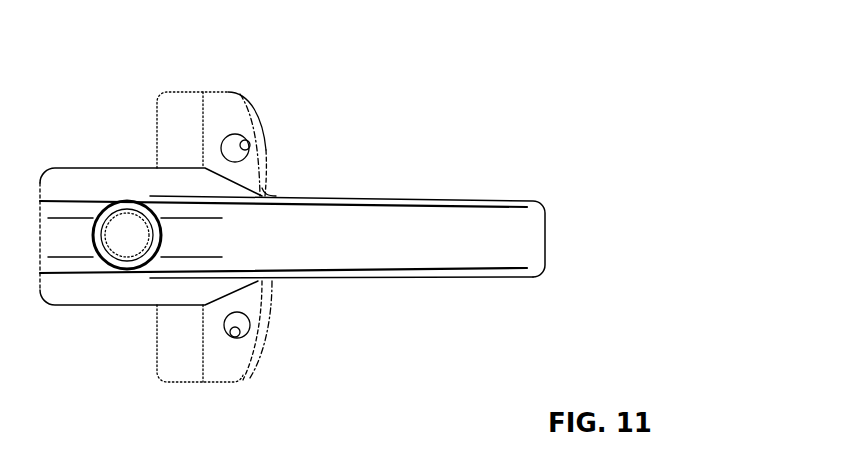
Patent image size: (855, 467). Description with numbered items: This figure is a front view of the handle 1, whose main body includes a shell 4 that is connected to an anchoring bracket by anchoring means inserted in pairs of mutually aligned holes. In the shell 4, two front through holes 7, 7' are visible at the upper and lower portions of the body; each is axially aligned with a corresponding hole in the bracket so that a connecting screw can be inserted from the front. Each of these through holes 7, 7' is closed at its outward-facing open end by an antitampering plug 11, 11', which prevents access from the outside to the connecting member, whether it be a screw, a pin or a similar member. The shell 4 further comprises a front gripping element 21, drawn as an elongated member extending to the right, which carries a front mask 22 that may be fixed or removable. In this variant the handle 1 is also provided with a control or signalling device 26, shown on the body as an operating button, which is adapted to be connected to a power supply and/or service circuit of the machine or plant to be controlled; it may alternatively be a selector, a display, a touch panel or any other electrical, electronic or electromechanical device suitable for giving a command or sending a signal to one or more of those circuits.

The handle 1 is at (452, 107).
The shell 4 is at (158, 370).
The front hole 7 is at (275, 111).
The front hole 7' is at (266, 375).
The antitampering plug 11 is at (221, 106).
The antitampering plug 11' is at (284, 326).
The front gripping element 21 is at (503, 197).
The front mask 22 is at (503, 252).
The control or signalling device 26 is at (122, 222).